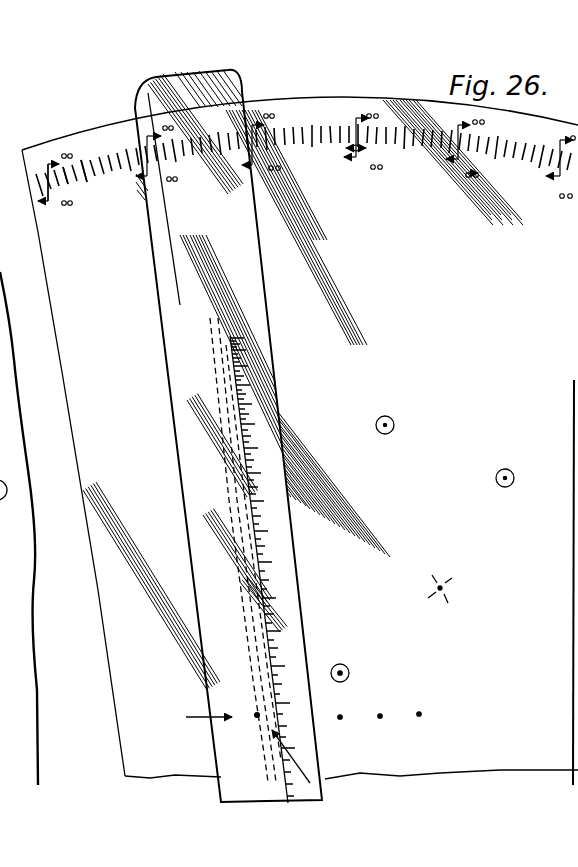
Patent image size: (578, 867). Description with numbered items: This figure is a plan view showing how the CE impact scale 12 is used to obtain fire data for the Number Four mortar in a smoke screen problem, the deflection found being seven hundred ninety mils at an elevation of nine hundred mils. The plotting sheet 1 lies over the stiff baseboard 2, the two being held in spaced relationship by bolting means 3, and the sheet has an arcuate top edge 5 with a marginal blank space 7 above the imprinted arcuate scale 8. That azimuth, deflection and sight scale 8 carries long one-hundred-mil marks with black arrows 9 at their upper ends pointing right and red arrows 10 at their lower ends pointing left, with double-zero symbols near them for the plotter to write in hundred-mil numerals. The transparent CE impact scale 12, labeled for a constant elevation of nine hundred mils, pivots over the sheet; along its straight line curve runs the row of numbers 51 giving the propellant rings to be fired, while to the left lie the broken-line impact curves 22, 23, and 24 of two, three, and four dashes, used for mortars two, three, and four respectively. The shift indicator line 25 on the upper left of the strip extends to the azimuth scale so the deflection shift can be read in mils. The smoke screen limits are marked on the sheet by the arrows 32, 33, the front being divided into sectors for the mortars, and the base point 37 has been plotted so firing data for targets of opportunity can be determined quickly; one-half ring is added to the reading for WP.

The plotting sheet 1 is at (300, 429).
The stiff baseboard 2 is at (392, 425).
The bolting means 3 is at (264, 485).
The top edge 5 is at (342, 100).
The marginal blank space 7 is at (84, 142).
The arcuate scale 8 is at (94, 155).
The black arrows 9 is at (68, 146).
The red arrows 10 is at (80, 189).
The CE impact scale 12 is at (217, 432).
The broken-line impact curve 22 is at (233, 411).
The broken-line impact curve 23 is at (222, 386).
The broken-line impact curve 24 is at (211, 357).
The shift indicator line 25 is at (167, 233).
The smoke screen limit arrow 32 is at (428, 707).
The smoke screen limit arrow 33 is at (254, 708).
The base point 37 is at (445, 578).
The row of numbers 51 is at (254, 328).